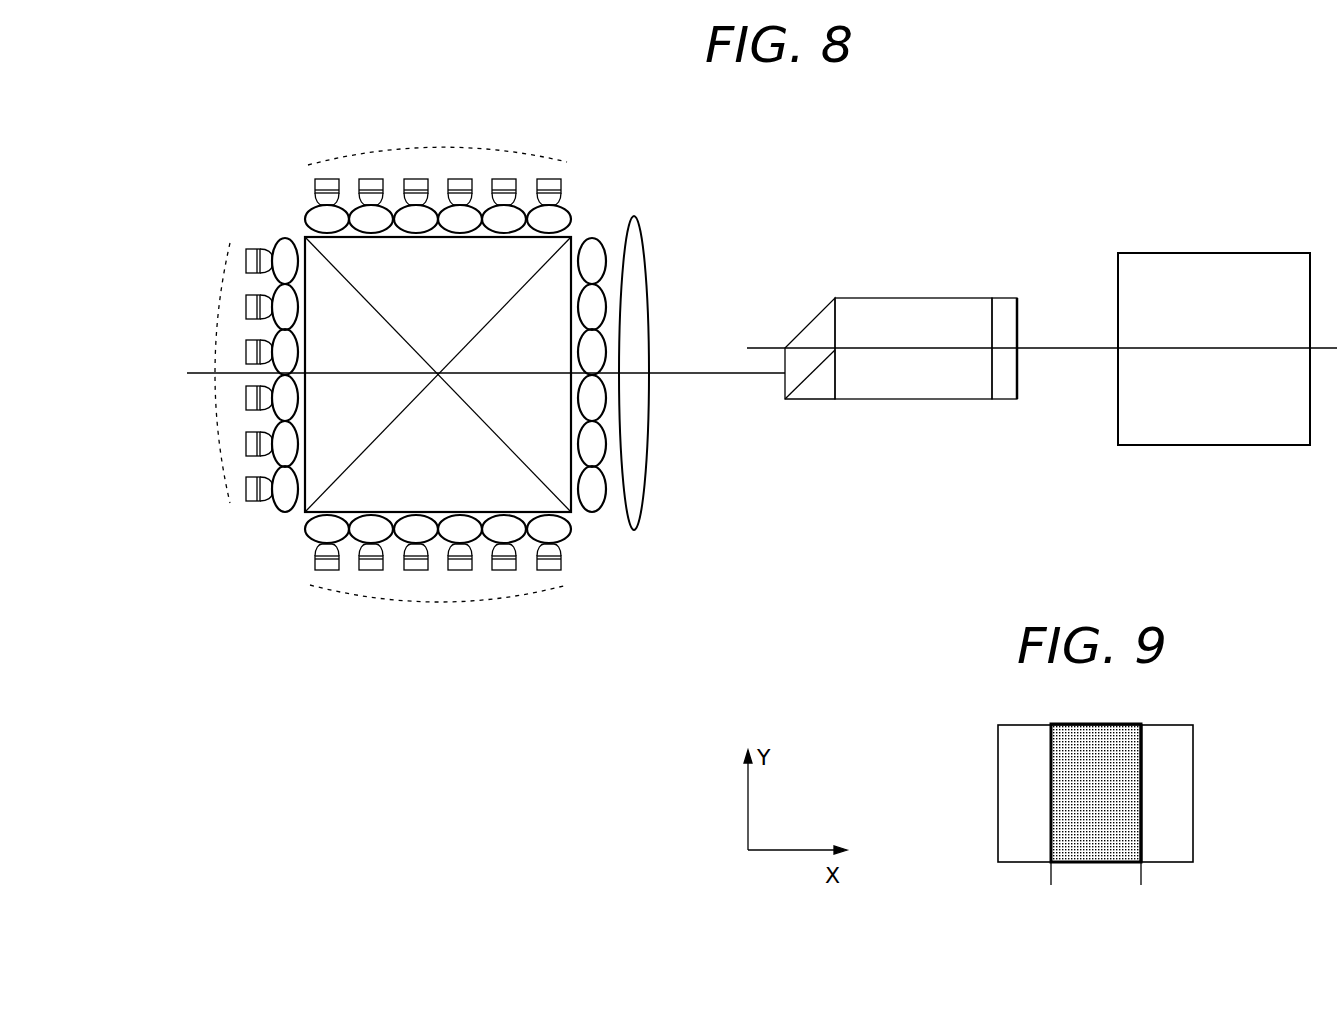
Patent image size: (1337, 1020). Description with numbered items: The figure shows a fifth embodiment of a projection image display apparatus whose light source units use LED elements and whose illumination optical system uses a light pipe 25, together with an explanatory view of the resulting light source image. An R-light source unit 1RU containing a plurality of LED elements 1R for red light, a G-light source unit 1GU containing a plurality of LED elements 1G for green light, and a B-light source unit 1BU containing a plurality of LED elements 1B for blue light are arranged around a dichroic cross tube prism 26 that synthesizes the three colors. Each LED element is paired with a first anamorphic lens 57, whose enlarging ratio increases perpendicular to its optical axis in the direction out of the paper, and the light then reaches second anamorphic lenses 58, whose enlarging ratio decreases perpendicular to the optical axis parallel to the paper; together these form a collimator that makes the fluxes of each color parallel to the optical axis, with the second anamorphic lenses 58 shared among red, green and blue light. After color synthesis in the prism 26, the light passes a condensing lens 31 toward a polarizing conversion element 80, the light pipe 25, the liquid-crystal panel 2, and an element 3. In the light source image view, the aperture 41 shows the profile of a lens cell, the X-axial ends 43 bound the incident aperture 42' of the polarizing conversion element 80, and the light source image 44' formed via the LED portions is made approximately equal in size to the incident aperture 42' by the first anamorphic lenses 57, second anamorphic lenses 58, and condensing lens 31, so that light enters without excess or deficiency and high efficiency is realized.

In FIG. 8, the B-light source unit 1BU is at (362, 148).
In FIG. 8, the LED element for B-light 1B is at (503, 183).
In FIG. 8, the G-light source unit 1GU is at (215, 316).
In FIG. 8, the LED element for G-light 1G is at (247, 440).
In FIG. 8, the R-light source unit 1RU is at (440, 603).
In FIG. 8, the LED element for R-light 1R is at (370, 565).
In FIG. 8, the dichroic cross tube prism 26 is at (437, 283).
In FIG. 8, the first anamorphic lens 57 is at (312, 218).
In FIG. 8, the second anamorphic lens 58 is at (590, 248).
In FIG. 8, the condensing lens 31 is at (645, 240).
In FIG. 8, the polarizing conversion element 80 is at (818, 327).
In FIG. 8, the light pipe 25 is at (908, 312).
In FIG. 8, the liquid-crystal panel 2 is at (1005, 312).
In FIG. 8, the projection optical system 3 is at (1210, 267).
In FIG. 9, the aperture 41 is at (1178, 790).
In FIG. 9, the incident aperture 42' is at (1206, 793).
In FIG. 9, the X-axial ends of incident aperture 43 is at (1141, 875).
In FIG. 9, the light source image 44' is at (1039, 793).